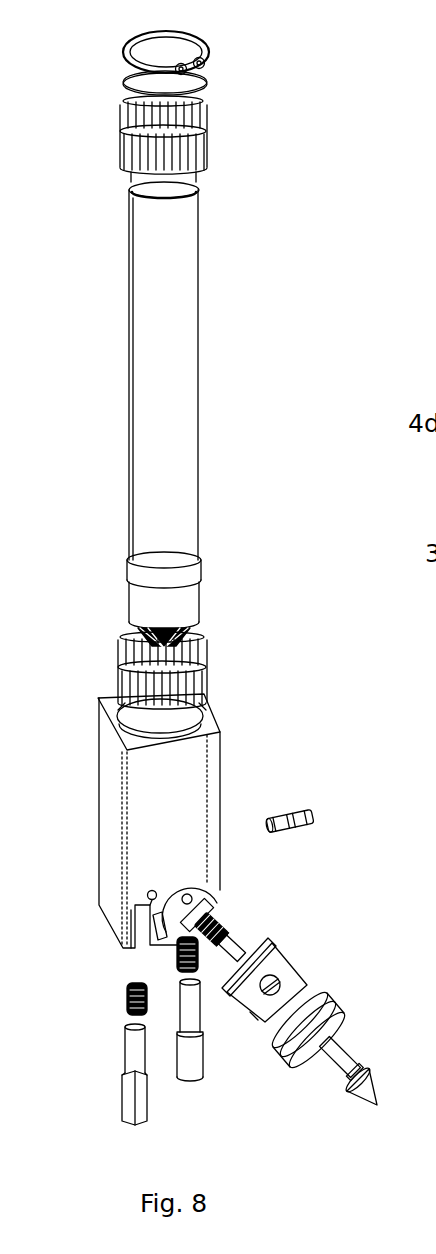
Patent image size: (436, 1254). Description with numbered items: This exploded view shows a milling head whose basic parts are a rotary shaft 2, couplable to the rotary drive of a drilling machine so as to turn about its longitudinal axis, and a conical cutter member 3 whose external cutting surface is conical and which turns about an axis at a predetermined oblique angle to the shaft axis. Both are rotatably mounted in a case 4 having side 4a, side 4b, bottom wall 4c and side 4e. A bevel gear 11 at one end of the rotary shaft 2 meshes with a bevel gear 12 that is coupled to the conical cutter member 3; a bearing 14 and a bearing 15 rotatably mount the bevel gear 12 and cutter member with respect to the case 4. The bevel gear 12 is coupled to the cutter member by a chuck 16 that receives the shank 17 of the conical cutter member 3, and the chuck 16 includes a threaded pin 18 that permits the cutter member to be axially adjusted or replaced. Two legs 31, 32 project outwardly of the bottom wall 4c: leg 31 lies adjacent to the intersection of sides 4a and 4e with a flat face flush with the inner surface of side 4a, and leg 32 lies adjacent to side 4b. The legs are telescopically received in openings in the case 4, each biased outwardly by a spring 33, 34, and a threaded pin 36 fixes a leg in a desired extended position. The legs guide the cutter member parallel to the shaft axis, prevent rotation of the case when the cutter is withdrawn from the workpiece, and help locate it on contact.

The rotary shaft 2 is at (193, 295).
The conical cutter member 3 is at (372, 1085).
The case 4 is at (220, 714).
The side of the case 4a is at (220, 787).
The side of the case 4b is at (183, 806).
The bottom wall of the case 4c is at (98, 788).
The side of the case 4e is at (102, 912).
The bevel gear 11 is at (188, 627).
The bevel gear 12 is at (232, 920).
The bearing 14 is at (210, 888).
The bearing 15 is at (323, 995).
The chuck 16 is at (288, 967).
The shank 17 is at (347, 1043).
The threaded pin 18 is at (263, 993).
The leg 31 is at (123, 1097).
The leg 32 is at (185, 1070).
The spring 33 is at (123, 1000).
The spring 34 is at (175, 957).
The threaded pin 36 is at (153, 922).